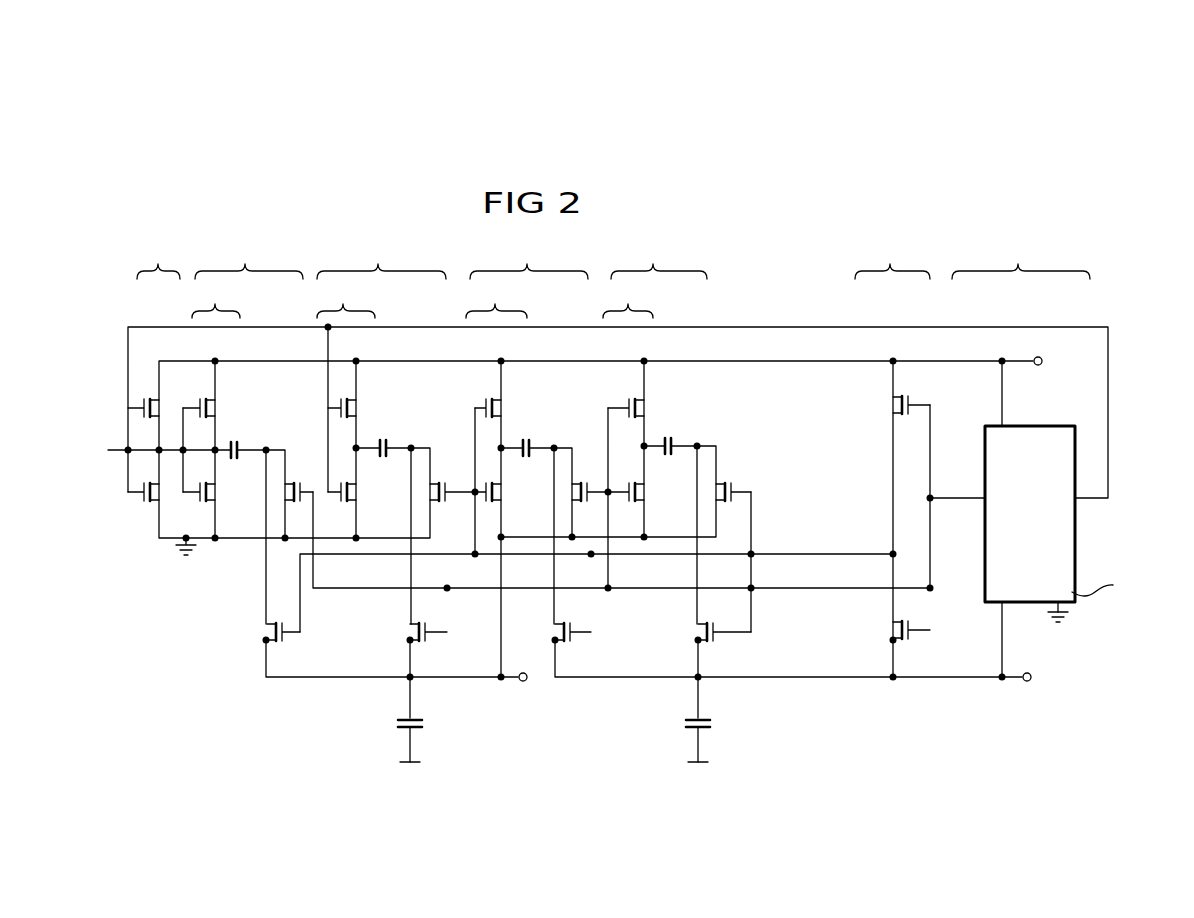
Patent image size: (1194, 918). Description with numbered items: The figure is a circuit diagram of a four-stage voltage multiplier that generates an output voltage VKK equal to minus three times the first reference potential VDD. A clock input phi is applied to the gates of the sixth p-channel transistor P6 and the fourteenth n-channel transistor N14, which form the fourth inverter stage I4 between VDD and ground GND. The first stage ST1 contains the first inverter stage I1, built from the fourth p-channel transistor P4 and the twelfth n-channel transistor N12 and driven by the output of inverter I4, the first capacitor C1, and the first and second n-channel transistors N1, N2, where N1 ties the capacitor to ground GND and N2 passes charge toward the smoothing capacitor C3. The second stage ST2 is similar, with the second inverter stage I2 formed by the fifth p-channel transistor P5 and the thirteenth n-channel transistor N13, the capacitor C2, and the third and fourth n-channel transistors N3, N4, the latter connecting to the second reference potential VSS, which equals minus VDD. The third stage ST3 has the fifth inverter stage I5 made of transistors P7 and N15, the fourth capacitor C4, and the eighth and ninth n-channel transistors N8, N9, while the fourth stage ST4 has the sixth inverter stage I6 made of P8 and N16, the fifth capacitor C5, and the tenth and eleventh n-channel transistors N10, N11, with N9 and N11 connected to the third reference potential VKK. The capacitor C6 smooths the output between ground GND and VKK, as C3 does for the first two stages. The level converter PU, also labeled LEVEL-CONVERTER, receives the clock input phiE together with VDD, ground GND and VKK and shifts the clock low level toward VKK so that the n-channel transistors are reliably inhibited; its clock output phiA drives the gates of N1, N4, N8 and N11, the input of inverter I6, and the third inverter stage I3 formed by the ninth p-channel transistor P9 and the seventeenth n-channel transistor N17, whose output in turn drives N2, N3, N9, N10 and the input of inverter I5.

The sixth p-channel field effect transistor P6 is at (153, 395).
The fourteenth n-channel field effect transistor N14 is at (161, 501).
The fourth p-channel field effect transistor P4 is at (209, 395).
The twelfth n-channel field effect transistor N12 is at (216, 501).
The first n-channel field effect transistor N1 is at (306, 483).
The fifth p-channel field effect transistor P5 is at (360, 395).
The thirteenth n-channel field effect transistor N13 is at (363, 501).
The third n-channel field effect transistor N3 is at (452, 483).
The p-channel field effect transistor P7 is at (506, 395).
The n-channel field effect transistor N15 is at (510, 501).
The eighth n-channel field effect transistor N8 is at (590, 483).
The p-channel field effect transistor P8 is at (644, 395).
The n-channel field effect transistor N16 is at (649, 501).
The tenth n-channel field effect transistor N10 is at (740, 478).
The ninth p-channel field effect transistor P9 is at (896, 393).
The seventeenth n-channel field effect transistor N17 is at (893, 630).
The second n-channel field effect transistor N2 is at (283, 617).
The fourth n-channel field effect transistor N4 is at (428, 617).
The ninth n-channel field effect transistor N9 is at (573, 617).
The eleventh n-channel field effect transistor N11 is at (724, 617).
The first capacitor C1 is at (236, 436).
The capacitor C2 is at (378, 435).
The smoothing capacitor C3 is at (426, 725).
The fourth capacitor C4 is at (520, 435).
The fifth capacitor C5 is at (662, 434).
The capacitor C6 is at (713, 725).
The first inverter stage I1 is at (216, 295).
The second inverter stage I2 is at (346, 295).
The third inverter stage I3 is at (892, 255).
The fourth inverter stage I4 is at (158, 255).
The fifth inverter stage I5 is at (496, 295).
The sixth inverter stage I6 is at (628, 295).
The first stage ST1 is at (249, 255).
The second stage ST2 is at (381, 255).
The third stage ST3 is at (529, 255).
The fourth stage ST4 is at (659, 255).
The level converter PU is at (1021, 255).
The first reference potential VDD is at (1063, 364).
The second reference potential VSS is at (524, 700).
The third reference potential VKK is at (1034, 699).
The ground GND is at (621, 680).
The clock input phi is at (110, 435).
The clock output phiA is at (960, 520).
The clock input of the level converter phiE is at (1094, 520).
The level converter LEVEL-CONVERTER is at (1132, 557).